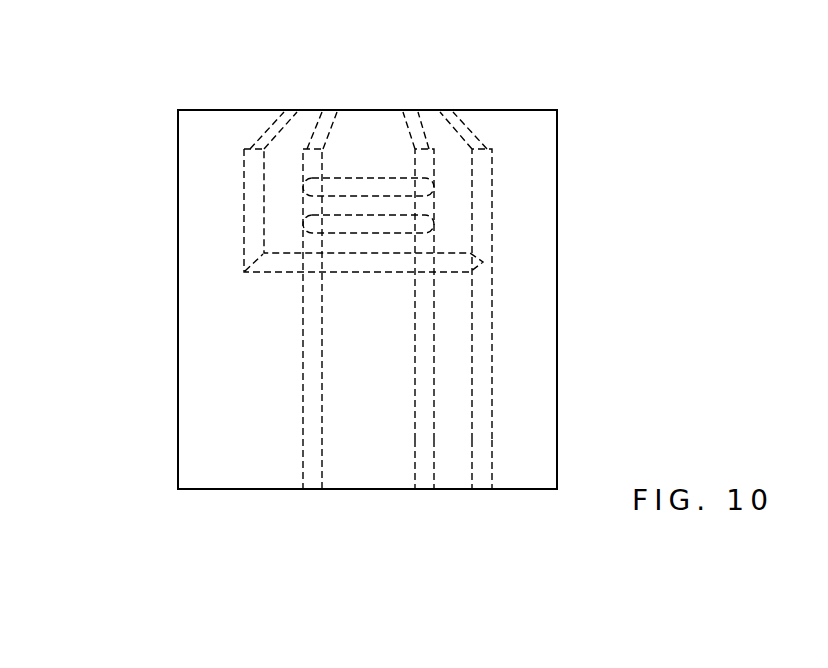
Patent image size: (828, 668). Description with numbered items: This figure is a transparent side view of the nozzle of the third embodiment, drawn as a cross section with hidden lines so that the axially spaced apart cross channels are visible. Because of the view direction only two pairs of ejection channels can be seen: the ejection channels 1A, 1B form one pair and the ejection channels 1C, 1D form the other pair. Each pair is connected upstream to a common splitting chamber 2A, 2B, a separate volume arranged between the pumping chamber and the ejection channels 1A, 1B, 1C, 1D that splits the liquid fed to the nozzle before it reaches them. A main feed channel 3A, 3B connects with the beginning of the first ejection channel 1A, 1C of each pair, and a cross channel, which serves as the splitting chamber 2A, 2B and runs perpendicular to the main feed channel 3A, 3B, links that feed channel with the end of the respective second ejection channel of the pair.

The ejection channel 1A is at (287, 110).
The ejection channel 1B is at (460, 117).
The ejection channel 1C is at (323, 113).
The ejection channel 1D is at (410, 117).
The splitting chamber 2A is at (280, 267).
The splitting chamber 2B is at (345, 227).
The main feed channel 3A is at (480, 470).
The main feed channel 3B is at (423, 473).